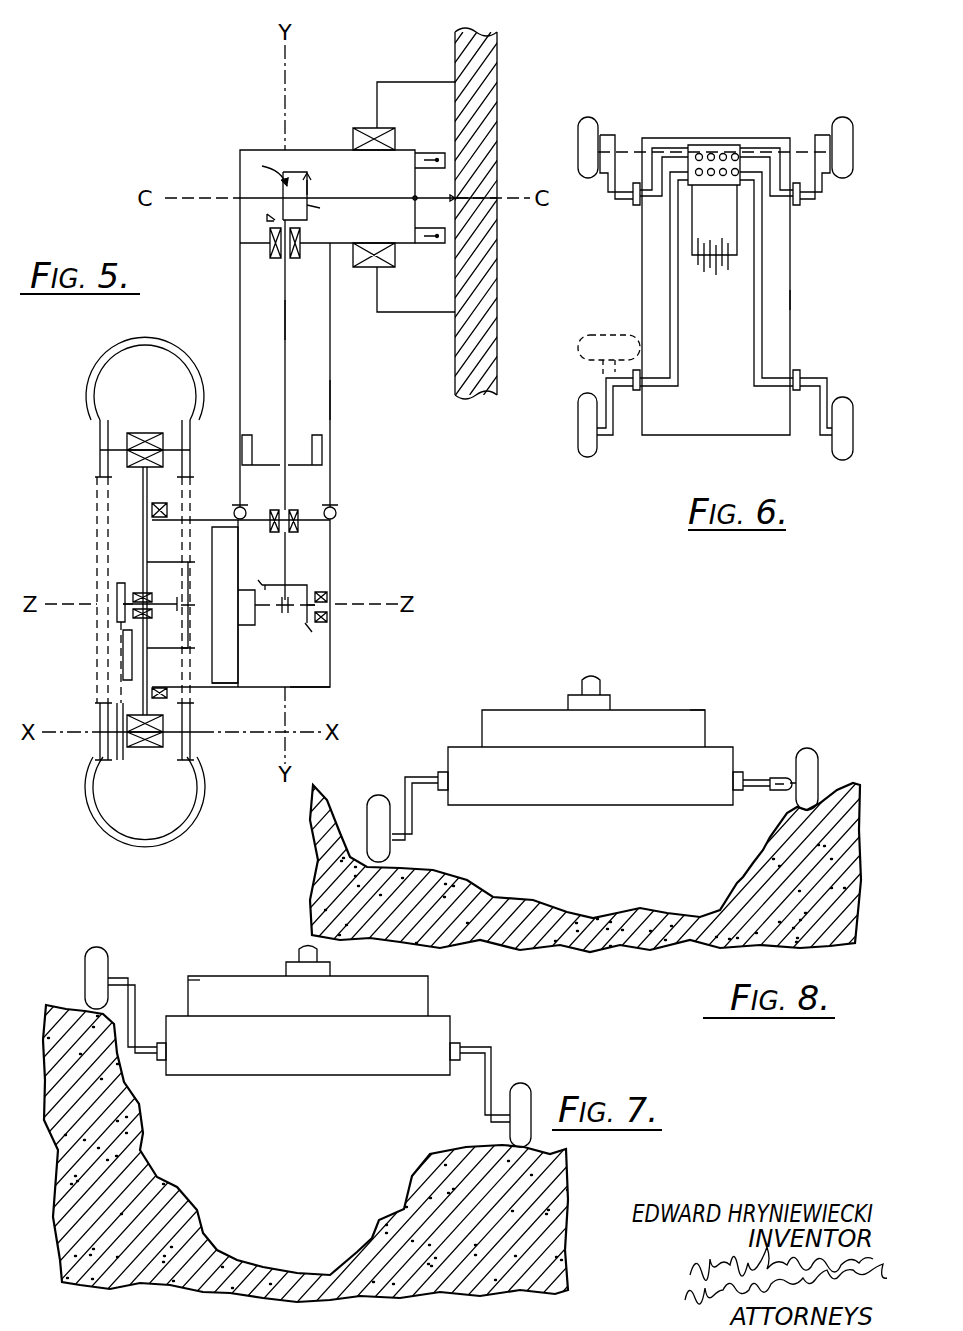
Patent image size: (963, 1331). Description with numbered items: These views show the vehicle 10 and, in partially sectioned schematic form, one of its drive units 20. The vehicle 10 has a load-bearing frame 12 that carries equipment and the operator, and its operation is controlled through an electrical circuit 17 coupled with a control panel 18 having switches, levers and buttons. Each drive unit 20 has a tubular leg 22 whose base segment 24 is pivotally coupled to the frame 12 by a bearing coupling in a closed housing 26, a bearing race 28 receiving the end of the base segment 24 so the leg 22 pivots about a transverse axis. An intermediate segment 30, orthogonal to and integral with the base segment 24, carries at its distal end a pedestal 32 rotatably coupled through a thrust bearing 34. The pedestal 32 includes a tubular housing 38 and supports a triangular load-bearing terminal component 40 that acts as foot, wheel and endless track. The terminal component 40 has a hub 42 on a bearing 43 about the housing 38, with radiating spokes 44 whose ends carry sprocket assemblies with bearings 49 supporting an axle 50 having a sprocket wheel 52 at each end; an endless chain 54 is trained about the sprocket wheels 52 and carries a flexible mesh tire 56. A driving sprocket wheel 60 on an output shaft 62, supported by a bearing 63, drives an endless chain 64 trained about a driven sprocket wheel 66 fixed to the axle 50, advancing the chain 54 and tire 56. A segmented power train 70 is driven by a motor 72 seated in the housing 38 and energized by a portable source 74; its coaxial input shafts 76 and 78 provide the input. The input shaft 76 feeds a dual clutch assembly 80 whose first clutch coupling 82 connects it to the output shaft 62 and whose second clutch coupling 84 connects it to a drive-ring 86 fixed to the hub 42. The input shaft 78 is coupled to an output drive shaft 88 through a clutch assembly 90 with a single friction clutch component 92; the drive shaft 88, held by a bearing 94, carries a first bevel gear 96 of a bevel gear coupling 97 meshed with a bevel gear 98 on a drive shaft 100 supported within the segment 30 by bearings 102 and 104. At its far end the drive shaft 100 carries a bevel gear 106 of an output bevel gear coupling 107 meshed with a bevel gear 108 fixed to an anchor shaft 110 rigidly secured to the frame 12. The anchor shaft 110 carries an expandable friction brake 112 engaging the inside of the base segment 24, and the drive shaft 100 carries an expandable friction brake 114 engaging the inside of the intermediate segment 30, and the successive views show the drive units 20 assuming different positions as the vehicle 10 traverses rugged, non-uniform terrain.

In FIG. 6, the vehicle 10 is at (799, 300).
In FIG. 8, the vehicle 10 is at (713, 706).
In FIG. 7, the vehicle 10 is at (187, 975).
In FIG. 5, the load-bearing frame 12 is at (488, 306).
In FIG. 6, the load-bearing frame 12 is at (642, 280).
In FIG. 8, the load-bearing frame 12 is at (582, 797).
In FIG. 7, the load-bearing frame 12 is at (318, 1062).
In FIG. 6, the electrical circuit 17 is at (670, 150).
In FIG. 6, the control panel 18 is at (712, 145).
In FIG. 5, the drive unit 20 is at (205, 700).
In FIG. 6, the drive unit 20 is at (611, 130).
In FIG. 8, the drive unit 20 is at (379, 793).
In FIG. 7, the drive unit 20 is at (87, 947).
In FIG. 5, the tubular leg 22 is at (334, 403).
In FIG. 8, the tubular leg 22 is at (767, 775).
In FIG. 5, the base segment 24 is at (260, 150).
In FIG. 5, the closed housing 26 is at (431, 82).
In FIG. 5, the bearing race 28 is at (368, 128).
In FIG. 5, the intermediate segment 30 is at (332, 355).
In FIG. 5, the pedestal 32 is at (334, 548).
In FIG. 5, the thrust bearing 34 is at (337, 513).
In FIG. 5, the housing 38 is at (312, 690).
In FIG. 5, the load-bearing terminal component 40 is at (89, 360).
In FIG. 6, the load-bearing terminal component 40 is at (585, 118).
In FIG. 5, the hub 42 is at (134, 626).
In FIG. 5, the bearing 43 is at (170, 510).
In FIG. 5, the spokes 44 is at (140, 505).
In FIG. 5, the bearings 49 is at (146, 433).
In FIG. 5, the axle 50 is at (120, 447).
In FIG. 5, the sprocket wheel 52 is at (97, 440).
In FIG. 5, the endless chain 54 is at (196, 487).
In FIG. 5, the flexible tire 56 is at (172, 838).
In FIG. 5, the driving sprocket wheel 60 is at (117, 595).
In FIG. 5, the output shaft 62 is at (170, 591).
In FIG. 5, the bearing 63 is at (140, 590).
In FIG. 5, the endless chain 64 is at (120, 656).
In FIG. 5, the driven sprocket wheel 66 is at (116, 755).
In FIG. 5, the segmented power train 70 is at (276, 322).
In FIG. 5, the motor 72 is at (257, 697).
In FIG. 6, the portable source of electrical potential 74 is at (720, 272).
In FIG. 5, the input shaft 76 is at (176, 678).
In FIG. 5, the input shaft 78 is at (247, 625).
In FIG. 5, the dual clutch assembly 80 is at (201, 566).
In FIG. 5, the first clutch coupling 82 is at (186, 616).
In FIG. 5, the second clutch coupling 84 is at (172, 562).
In FIG. 5, the drive-ring 86 is at (160, 650).
In FIG. 5, the output drive shaft 88 is at (286, 626).
In FIG. 5, the clutch assembly 90 is at (277, 583).
In FIG. 5, the clutch component 92 is at (292, 583).
In FIG. 5, the bearing 94 is at (328, 615).
In FIG. 5, the first bevel gear 96 is at (304, 632).
In FIG. 5, the bevel gear coupling 97 is at (262, 552).
In FIG. 5, the bevel gear 98 is at (312, 583).
In FIG. 5, the drive shaft 100 is at (287, 382).
In FIG. 5, the bearing 102 is at (292, 508).
In FIG. 5, the bearing 104 is at (295, 258).
In FIG. 5, the bevel gear 106 is at (272, 193).
In FIG. 5, the bevel gear coupling 107 is at (240, 166).
In FIG. 5, the bevel gear 108 is at (320, 208).
In FIG. 5, the anchor shaft 110 is at (360, 197).
In FIG. 5, the expandable friction brake 112 is at (422, 153).
In FIG. 5, the expandable friction brake 114 is at (324, 445).